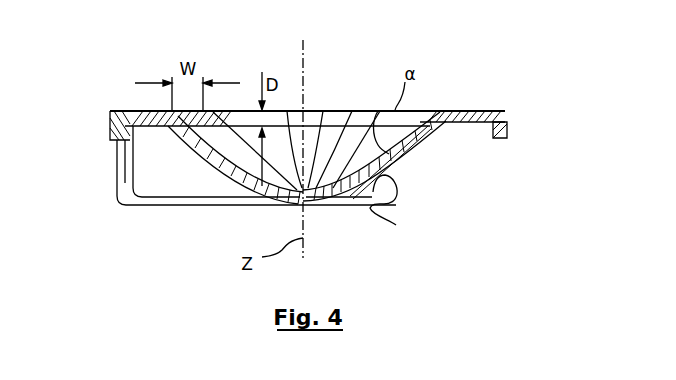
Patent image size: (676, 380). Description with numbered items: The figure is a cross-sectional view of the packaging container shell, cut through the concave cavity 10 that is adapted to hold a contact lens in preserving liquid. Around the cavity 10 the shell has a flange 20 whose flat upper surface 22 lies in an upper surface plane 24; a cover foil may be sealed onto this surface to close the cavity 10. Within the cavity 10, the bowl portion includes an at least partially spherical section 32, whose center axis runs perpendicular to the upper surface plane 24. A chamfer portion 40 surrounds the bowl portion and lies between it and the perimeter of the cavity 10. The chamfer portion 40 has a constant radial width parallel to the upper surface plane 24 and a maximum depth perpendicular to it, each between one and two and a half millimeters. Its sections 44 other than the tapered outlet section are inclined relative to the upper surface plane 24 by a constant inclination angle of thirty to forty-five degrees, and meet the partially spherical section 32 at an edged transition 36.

The cavity 10 is at (200, 204).
The flange 20 is at (127, 111).
The flat upper surface 22 is at (487, 106).
The upper surface plane 24 is at (509, 110).
The partially spherical section 32 is at (387, 202).
The transition 36 is at (188, 125).
The chamfer portion 40 is at (330, 112).
The sections of the chamfer portion other than the outlet section 44 is at (118, 142).